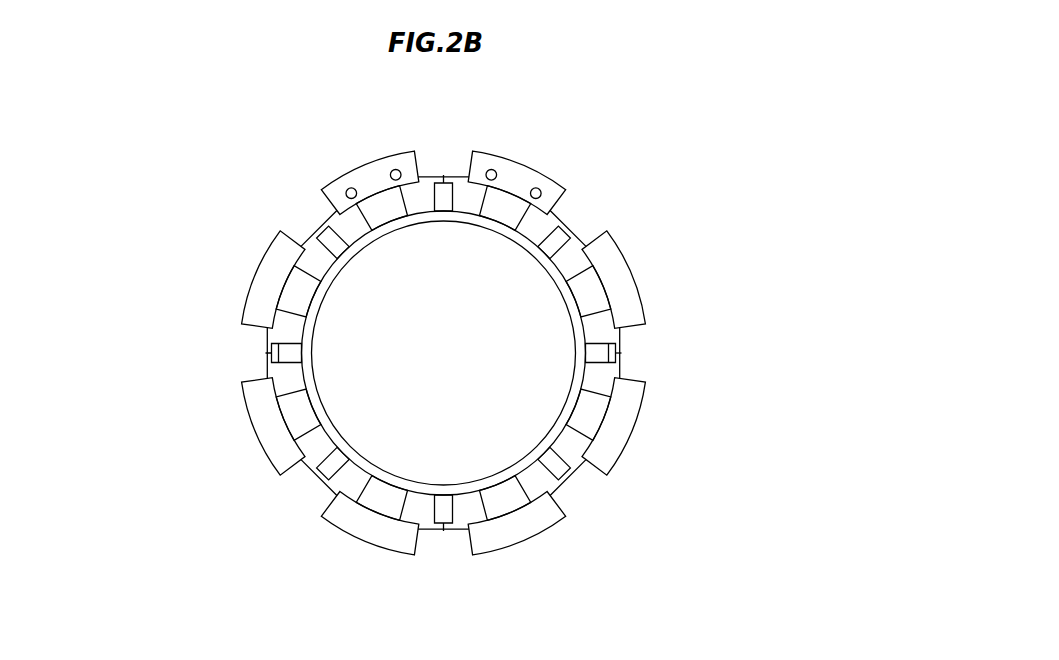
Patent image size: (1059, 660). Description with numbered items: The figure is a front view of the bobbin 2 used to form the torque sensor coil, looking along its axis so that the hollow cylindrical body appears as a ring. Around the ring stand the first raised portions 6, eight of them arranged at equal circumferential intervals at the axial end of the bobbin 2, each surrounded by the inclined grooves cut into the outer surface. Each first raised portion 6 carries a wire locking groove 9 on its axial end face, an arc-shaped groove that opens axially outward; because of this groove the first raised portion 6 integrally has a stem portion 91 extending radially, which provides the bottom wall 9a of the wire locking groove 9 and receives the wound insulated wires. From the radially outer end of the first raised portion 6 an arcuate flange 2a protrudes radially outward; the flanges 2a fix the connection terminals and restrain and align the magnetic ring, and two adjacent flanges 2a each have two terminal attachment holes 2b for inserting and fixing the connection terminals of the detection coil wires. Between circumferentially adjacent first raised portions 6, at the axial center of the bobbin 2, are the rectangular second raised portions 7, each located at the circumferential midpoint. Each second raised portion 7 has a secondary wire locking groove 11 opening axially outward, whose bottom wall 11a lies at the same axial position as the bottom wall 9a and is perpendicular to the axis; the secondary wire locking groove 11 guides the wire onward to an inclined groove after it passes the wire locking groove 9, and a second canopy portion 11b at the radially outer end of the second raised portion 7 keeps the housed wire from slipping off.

The bobbin 2 is at (340, 135).
The flange 2a is at (322, 188).
The terminal attachment hole 2b is at (394, 169).
The first raised portion 6 is at (505, 217).
The second raised portion 7 is at (575, 240).
The wire locking groove 9 is at (288, 308).
The bottom wall 9a is at (297, 292).
The stem portion 91 is at (292, 415).
The secondary wire locking groove 11 is at (612, 348).
The bottom wall 11a is at (622, 360).
The second canopy portion 11b is at (620, 363).